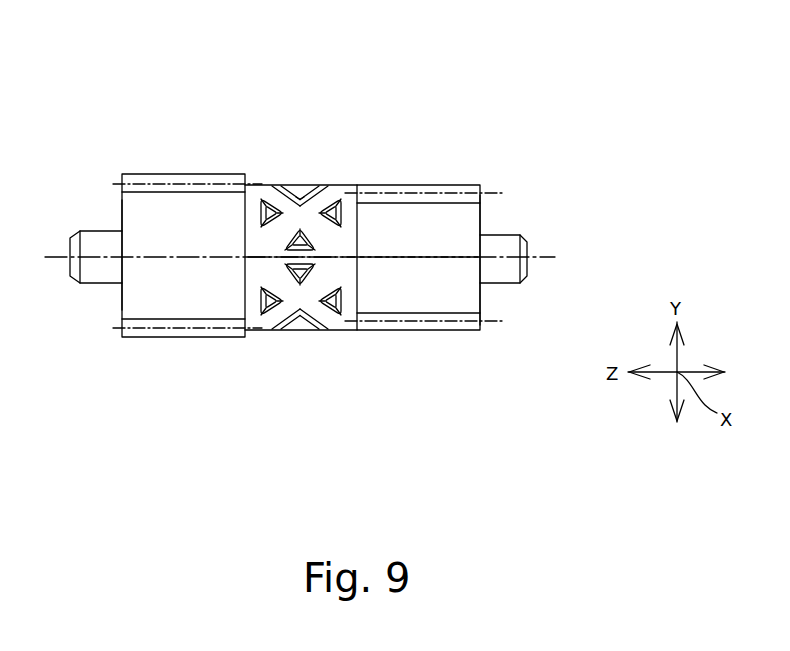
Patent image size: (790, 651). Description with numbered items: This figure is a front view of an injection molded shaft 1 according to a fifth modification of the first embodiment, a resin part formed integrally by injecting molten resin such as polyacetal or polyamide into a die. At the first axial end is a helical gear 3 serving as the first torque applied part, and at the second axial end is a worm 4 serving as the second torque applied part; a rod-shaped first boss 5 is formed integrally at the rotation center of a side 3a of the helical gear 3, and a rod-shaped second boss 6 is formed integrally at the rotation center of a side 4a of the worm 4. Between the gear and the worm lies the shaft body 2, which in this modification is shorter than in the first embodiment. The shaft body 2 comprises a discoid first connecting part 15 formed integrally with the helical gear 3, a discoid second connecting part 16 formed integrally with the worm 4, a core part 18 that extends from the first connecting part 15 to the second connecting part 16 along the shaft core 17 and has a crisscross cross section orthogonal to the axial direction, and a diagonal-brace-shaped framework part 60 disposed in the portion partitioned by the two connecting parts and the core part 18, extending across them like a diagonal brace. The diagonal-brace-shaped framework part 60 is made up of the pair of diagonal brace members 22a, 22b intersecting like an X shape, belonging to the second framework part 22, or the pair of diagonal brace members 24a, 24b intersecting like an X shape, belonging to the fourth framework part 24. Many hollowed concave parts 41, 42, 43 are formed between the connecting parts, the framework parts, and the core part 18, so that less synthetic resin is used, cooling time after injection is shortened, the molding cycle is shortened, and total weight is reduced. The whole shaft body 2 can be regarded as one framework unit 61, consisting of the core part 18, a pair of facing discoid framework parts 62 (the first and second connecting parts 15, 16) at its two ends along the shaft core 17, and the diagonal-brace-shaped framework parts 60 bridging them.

The injection molded shaft 1 is at (468, 175).
The shaft body 2 is at (338, 194).
The framework unit 61 is at (331, 183).
The helical gear 3 is at (141, 188).
The side of the helical gear 3a is at (118, 303).
The worm 4 is at (435, 193).
The side of the worm 4a is at (484, 213).
The first boss 5 is at (90, 240).
The second boss 6 is at (513, 243).
The first connecting part 15 is at (230, 176).
The second connecting part 16 is at (342, 322).
The discoid framework part 62 is at (257, 183).
The shaft core 17 is at (448, 258).
The core part 18 is at (283, 273).
The second framework part 22 is at (254, 256).
The fourth framework part 24 is at (254, 256).
The diagonal brace member 22a is at (225, 252).
The diagonal brace member 24a is at (281, 187).
The diagonal brace member 22b is at (308, 252).
The diagonal brace member 24b is at (318, 187).
The hollowed concave part 41 is at (283, 243).
The hollowed concave part 42 is at (322, 223).
The hollowed concave part 43 is at (300, 185).
The diagonal-brace-shaped framework part 60 is at (329, 196).